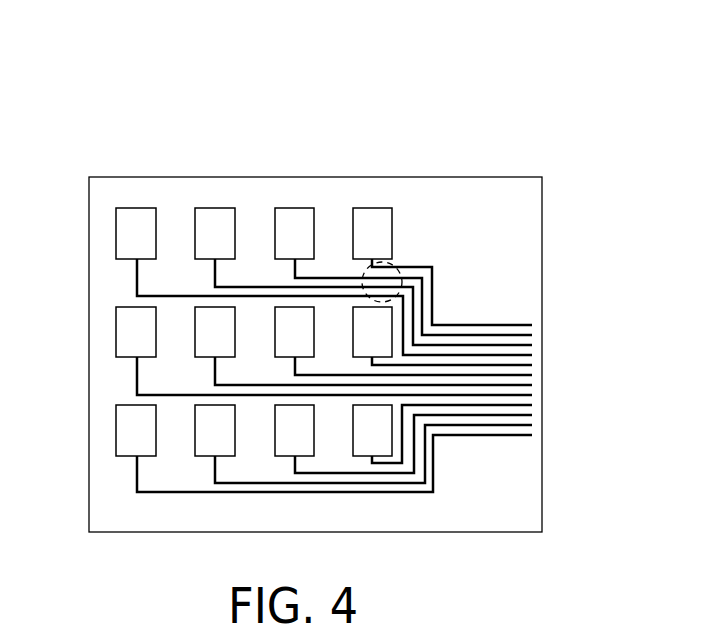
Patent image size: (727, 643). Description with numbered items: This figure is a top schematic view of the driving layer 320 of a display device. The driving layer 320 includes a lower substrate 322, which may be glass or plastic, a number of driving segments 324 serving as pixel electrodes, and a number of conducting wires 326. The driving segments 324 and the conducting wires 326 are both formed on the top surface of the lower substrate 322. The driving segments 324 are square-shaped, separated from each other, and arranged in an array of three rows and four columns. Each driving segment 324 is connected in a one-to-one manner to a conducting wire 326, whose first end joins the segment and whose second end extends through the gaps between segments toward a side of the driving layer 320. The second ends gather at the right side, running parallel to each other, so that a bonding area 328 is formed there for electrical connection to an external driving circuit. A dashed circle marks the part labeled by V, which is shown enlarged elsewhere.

The driving layer 320 is at (318, 73).
The lower substrate 322 is at (123, 192).
The driving segments 324 is at (208, 225).
The conducting wires 326 is at (337, 276).
The bonding area 328 is at (487, 420).
The part labeled by V is at (402, 262).